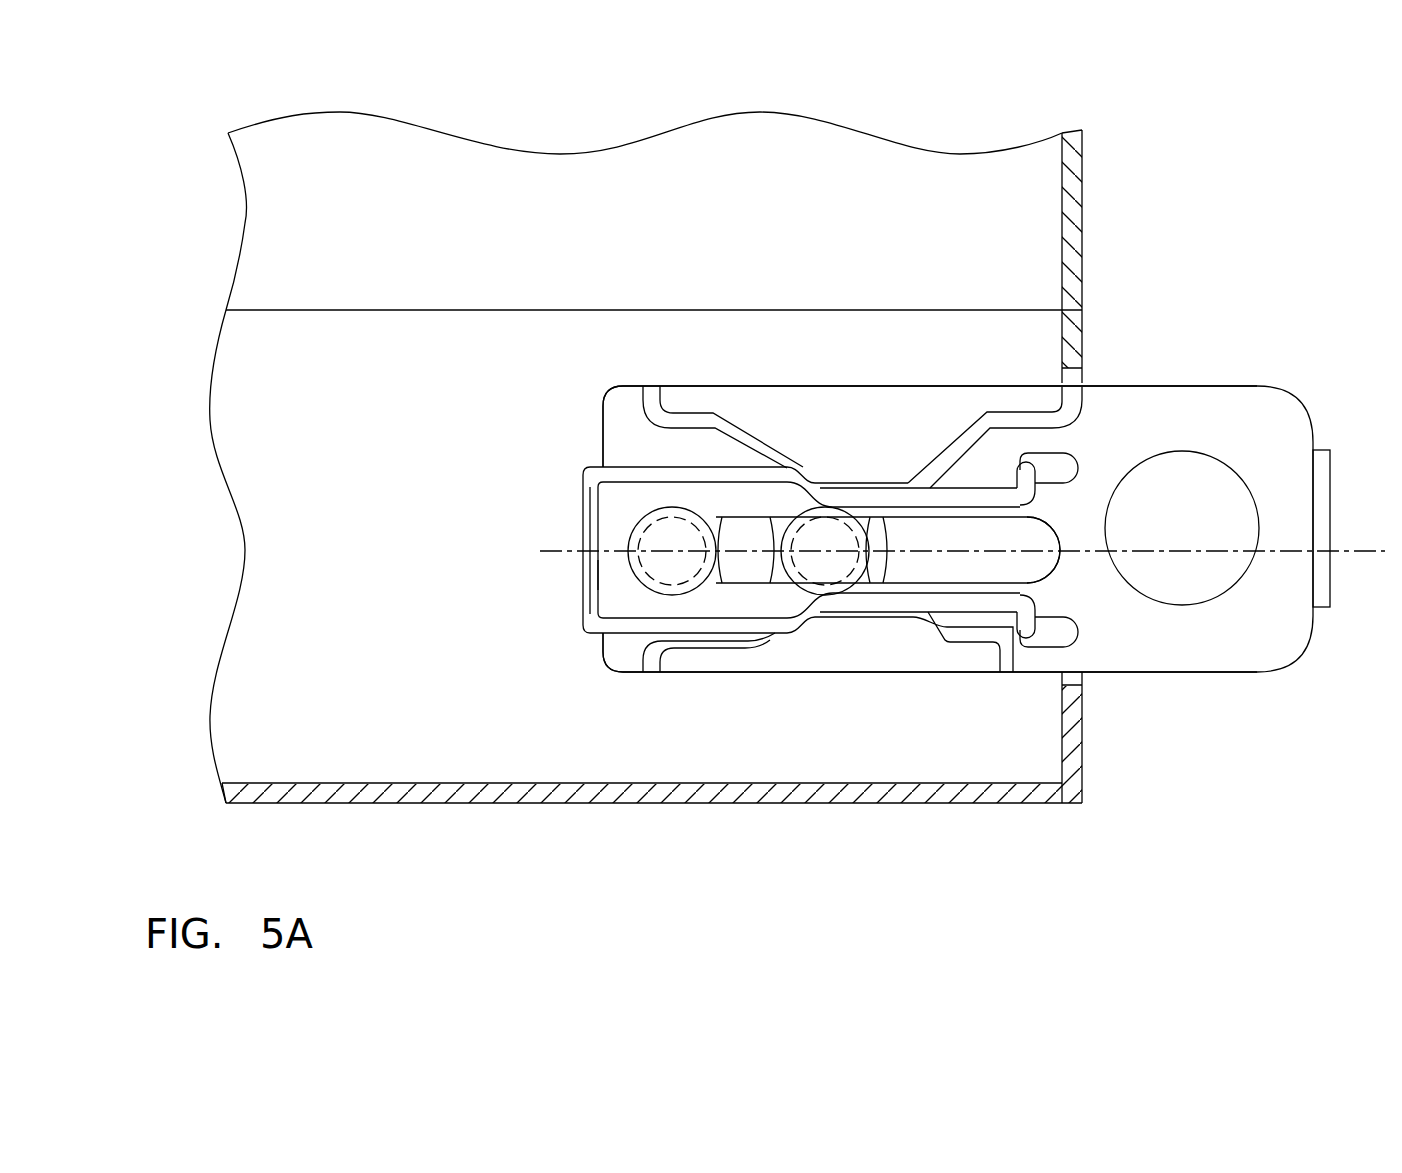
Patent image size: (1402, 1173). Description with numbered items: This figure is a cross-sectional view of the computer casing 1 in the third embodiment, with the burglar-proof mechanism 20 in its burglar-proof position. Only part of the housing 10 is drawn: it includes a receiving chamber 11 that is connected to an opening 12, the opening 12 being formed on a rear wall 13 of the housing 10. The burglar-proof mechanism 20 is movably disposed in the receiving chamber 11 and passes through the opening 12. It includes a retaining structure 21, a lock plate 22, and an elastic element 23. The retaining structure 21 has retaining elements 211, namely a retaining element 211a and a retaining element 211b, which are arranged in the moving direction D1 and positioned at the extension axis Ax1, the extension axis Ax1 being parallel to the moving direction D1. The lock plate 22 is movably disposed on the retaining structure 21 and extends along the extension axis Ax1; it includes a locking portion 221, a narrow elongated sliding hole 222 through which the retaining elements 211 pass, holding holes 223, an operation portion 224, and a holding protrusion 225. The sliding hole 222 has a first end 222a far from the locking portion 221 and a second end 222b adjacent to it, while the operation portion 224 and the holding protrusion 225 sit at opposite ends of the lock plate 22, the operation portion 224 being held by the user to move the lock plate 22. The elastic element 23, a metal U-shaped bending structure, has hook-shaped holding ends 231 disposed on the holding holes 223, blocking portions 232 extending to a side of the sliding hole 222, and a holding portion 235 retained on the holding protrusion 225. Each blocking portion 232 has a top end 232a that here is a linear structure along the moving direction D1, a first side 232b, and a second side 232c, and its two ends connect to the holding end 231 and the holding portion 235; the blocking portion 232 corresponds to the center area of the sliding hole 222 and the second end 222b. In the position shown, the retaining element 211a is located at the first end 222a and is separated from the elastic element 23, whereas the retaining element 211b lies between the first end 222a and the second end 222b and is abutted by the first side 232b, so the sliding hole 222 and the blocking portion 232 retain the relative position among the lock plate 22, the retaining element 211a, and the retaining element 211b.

The computer casing 1 is at (1327, 147).
The housing 10 is at (1086, 157).
The receiving chamber 11 is at (303, 365).
The opening 12 is at (1072, 683).
The rear wall 13 is at (1070, 727).
The burglar-proof mechanism 20 is at (1262, 370).
The retaining structure 21 is at (451, 352).
The lock plate 22 is at (607, 388).
The elastic element 23 is at (586, 468).
The retaining elements 211 is at (90, 112).
The retaining element 211a is at (680, 532).
The retaining element 211b is at (840, 505).
The locking portion 221 is at (1232, 467).
The sliding hole 222 is at (955, 530).
The first end 222a is at (645, 543).
The second end 222b is at (1062, 578).
The holding holes 223 is at (1050, 470).
The operation portion 224 is at (1322, 468).
The holding protrusion 225 is at (597, 575).
The holding ends 231 is at (1032, 468).
The blocking portions 232 is at (90, 228).
The top end 232a is at (905, 500).
The first side 232b is at (843, 498).
The second side 232c is at (1017, 472).
The holding portion 235 is at (597, 487).
The extension axis Ax1 is at (1360, 562).
The moving direction D1 is at (700, 878).